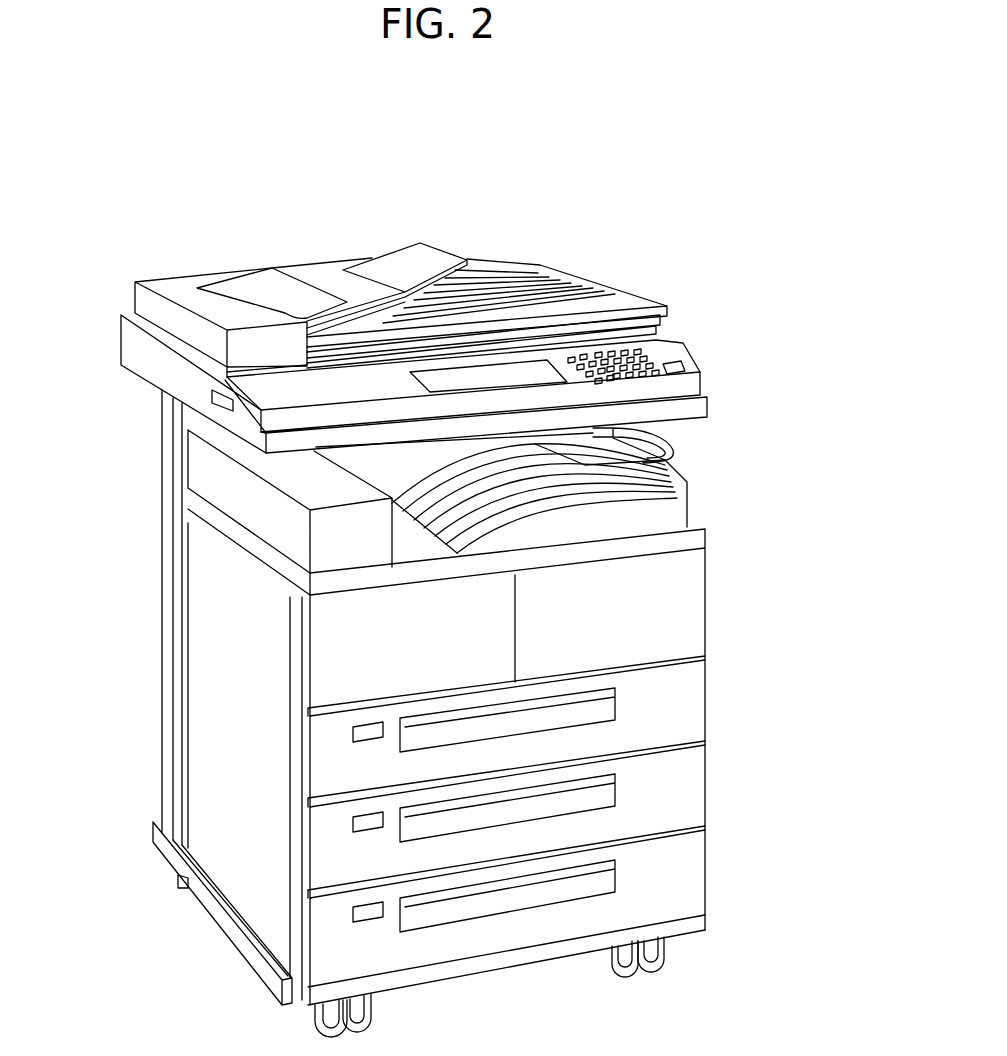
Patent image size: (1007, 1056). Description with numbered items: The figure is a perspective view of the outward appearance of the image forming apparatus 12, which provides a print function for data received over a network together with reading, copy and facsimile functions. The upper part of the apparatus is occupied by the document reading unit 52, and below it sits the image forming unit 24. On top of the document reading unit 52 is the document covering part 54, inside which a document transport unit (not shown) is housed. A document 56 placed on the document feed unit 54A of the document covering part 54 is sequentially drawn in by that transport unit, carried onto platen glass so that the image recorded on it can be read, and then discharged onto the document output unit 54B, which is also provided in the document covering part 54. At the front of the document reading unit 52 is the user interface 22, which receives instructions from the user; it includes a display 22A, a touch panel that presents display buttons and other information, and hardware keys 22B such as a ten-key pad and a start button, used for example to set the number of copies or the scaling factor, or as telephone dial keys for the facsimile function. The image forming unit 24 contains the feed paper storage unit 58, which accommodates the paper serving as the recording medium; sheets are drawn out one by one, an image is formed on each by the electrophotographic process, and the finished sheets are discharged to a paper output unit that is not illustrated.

The image forming apparatus 12 is at (546, 153).
The user interface 22 is at (688, 350).
The display 22A is at (410, 372).
The hardware keys 22B is at (672, 362).
The image forming unit 24 is at (222, 843).
The document reading unit 52 is at (141, 337).
The document covering part 54 is at (150, 304).
The document feed unit 54A is at (400, 258).
The document output unit 54B is at (488, 300).
The document 56 is at (242, 292).
The feed paper storage unit 58 is at (693, 703).